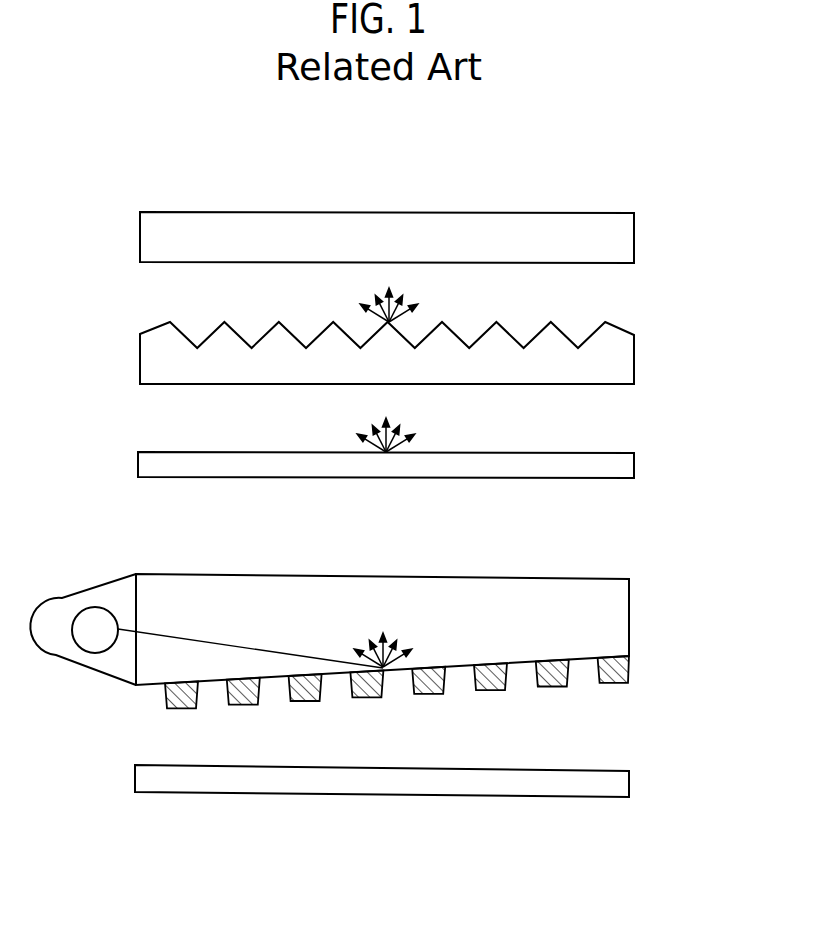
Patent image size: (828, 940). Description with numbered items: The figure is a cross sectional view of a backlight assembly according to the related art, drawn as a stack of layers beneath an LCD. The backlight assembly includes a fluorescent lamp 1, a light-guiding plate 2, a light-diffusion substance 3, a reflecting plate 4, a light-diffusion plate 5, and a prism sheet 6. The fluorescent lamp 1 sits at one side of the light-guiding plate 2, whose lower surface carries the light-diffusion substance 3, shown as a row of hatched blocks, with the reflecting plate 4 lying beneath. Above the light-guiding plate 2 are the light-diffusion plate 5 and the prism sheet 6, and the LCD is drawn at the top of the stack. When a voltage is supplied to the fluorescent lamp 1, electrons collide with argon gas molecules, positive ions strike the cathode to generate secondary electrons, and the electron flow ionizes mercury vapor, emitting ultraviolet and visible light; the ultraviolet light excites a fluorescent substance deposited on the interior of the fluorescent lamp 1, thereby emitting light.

The element LCD is at (634, 241).
The fluorescent lamp 1 is at (90, 608).
The light-guiding plate 2 is at (629, 620).
The light-diffusion substance 3 is at (629, 667).
The reflecting plate 4 is at (629, 787).
The light-diffusion plate 5 is at (634, 466).
The prism sheet 6 is at (634, 365).